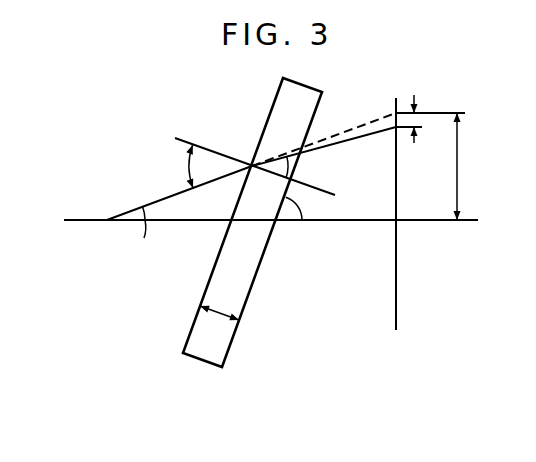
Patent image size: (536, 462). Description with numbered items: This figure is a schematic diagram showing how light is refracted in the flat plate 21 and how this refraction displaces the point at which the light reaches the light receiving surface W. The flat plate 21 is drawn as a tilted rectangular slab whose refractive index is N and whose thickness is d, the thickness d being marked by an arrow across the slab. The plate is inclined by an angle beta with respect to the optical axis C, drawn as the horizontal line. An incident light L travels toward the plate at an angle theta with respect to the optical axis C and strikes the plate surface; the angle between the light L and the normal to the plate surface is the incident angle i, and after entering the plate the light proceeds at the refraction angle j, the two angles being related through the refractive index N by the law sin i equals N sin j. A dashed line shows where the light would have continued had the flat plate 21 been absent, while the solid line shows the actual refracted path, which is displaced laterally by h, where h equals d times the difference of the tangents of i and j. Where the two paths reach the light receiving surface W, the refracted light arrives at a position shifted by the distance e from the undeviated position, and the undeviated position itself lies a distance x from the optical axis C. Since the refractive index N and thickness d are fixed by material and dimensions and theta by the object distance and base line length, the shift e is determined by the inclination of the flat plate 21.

The flat plate 21 is at (292, 358).
The incident light L is at (227, 160).
The optical axis C is at (470, 220).
The light receiving surface W is at (396, 304).
The refractive index N is at (242, 246).
The thickness d is at (219, 303).
The distance of positional shift e is at (430, 119).
The shift of light receiving position x is at (468, 166).
The lateral displacement of refracted light h is at (319, 143).
The incident angle i is at (182, 166).
The refraction angle j is at (306, 171).